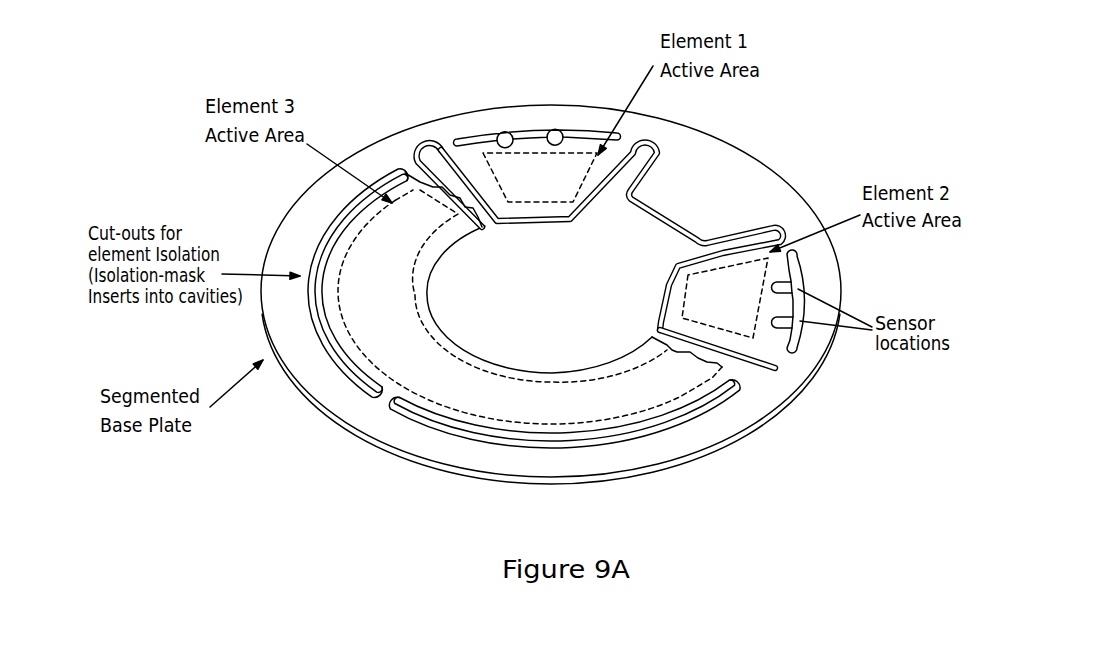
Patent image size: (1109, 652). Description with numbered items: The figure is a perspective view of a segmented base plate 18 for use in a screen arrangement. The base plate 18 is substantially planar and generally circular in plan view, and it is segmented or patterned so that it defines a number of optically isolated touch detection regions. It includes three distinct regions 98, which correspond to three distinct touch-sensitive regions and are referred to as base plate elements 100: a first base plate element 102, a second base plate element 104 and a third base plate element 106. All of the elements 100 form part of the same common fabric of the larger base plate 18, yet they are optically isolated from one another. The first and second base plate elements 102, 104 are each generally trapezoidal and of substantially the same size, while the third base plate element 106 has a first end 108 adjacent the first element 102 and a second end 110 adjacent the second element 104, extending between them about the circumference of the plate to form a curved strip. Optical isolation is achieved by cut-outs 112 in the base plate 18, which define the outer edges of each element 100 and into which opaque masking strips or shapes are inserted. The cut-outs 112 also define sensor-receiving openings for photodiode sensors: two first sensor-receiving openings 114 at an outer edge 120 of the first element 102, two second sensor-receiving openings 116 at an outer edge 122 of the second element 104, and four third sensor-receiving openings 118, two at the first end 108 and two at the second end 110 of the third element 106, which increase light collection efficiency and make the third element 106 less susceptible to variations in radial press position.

The base plate 18 is at (820, 62).
The distinct regions 98 is at (568, 172).
The base plate elements 100 is at (405, 367).
The first base plate element 102 is at (515, 172).
The second base plate element 104 is at (797, 266).
The third base plate element 106 is at (452, 390).
The first end 108 is at (403, 157).
The second end 110 is at (775, 384).
The cut-outs 112 is at (425, 158).
The first sensor-receiving openings 114 is at (556, 137).
The second sensor-receiving openings 116 is at (748, 293).
The third sensor-receiving openings 118 is at (458, 207).
The outer edge 120 is at (482, 155).
The outer edge 122 is at (774, 342).